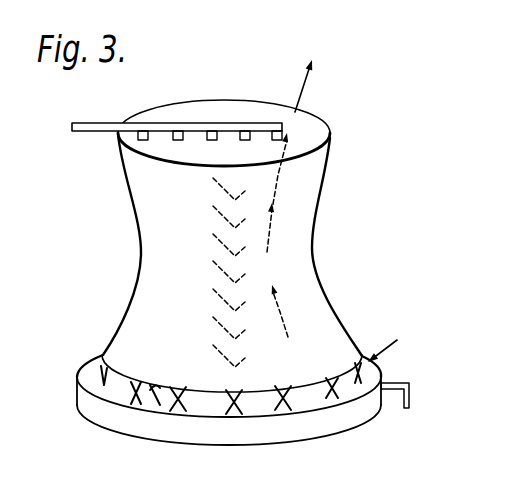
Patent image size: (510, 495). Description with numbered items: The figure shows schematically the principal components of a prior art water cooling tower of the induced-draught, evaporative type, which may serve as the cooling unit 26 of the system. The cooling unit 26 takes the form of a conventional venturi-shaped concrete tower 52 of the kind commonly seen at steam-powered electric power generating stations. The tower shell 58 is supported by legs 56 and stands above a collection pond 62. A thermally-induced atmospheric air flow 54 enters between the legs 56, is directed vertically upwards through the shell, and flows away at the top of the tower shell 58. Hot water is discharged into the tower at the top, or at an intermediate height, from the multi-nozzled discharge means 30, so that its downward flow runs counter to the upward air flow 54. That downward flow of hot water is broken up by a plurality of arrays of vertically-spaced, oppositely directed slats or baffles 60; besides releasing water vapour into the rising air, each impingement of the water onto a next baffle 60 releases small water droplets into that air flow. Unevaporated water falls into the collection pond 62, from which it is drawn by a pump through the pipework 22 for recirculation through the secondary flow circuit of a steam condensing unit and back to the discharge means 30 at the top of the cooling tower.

The pipework 22 is at (413, 386).
The cooling unit 26 is at (240, 76).
The discharge means 30 is at (110, 120).
The venturi-shaped concrete tower 52 is at (120, 188).
The thermally-induced atmospheric air flow 54 is at (303, 95).
The legs 56 is at (292, 403).
The tower shell 58 is at (337, 307).
The slats or baffles 60 is at (218, 226).
The collection pond 62 is at (160, 393).